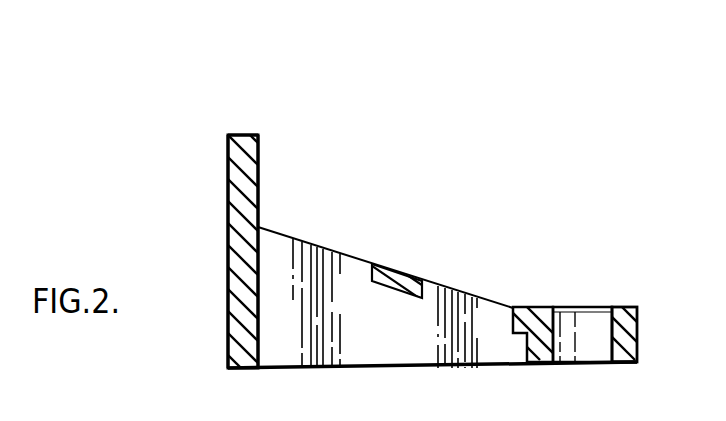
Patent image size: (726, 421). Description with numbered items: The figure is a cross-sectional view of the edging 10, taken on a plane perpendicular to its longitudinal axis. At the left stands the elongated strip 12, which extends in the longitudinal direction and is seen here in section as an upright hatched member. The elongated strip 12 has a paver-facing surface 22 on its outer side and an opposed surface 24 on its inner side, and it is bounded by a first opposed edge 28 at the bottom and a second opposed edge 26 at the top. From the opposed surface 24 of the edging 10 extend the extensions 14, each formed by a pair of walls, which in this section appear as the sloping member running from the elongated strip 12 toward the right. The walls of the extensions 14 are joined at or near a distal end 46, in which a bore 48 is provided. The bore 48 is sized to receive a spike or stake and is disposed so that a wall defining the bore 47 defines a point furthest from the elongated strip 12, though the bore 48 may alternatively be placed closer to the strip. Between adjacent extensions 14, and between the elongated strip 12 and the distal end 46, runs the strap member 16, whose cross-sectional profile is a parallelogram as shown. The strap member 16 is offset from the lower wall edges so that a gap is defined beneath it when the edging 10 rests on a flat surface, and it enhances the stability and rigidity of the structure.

The edging 10 is at (229, 114).
The elongated strip 12 is at (258, 134).
The extensions 14 is at (449, 282).
The strap member 16 is at (399, 265).
The paver-facing surface 22 is at (228, 206).
The opposed surface 24 is at (258, 206).
The second opposed edge 26 is at (228, 134).
The first opposed edge 28 is at (228, 372).
The distal end 46 is at (626, 330).
The wall defining the bore 47 is at (612, 362).
The bore 48 is at (583, 322).